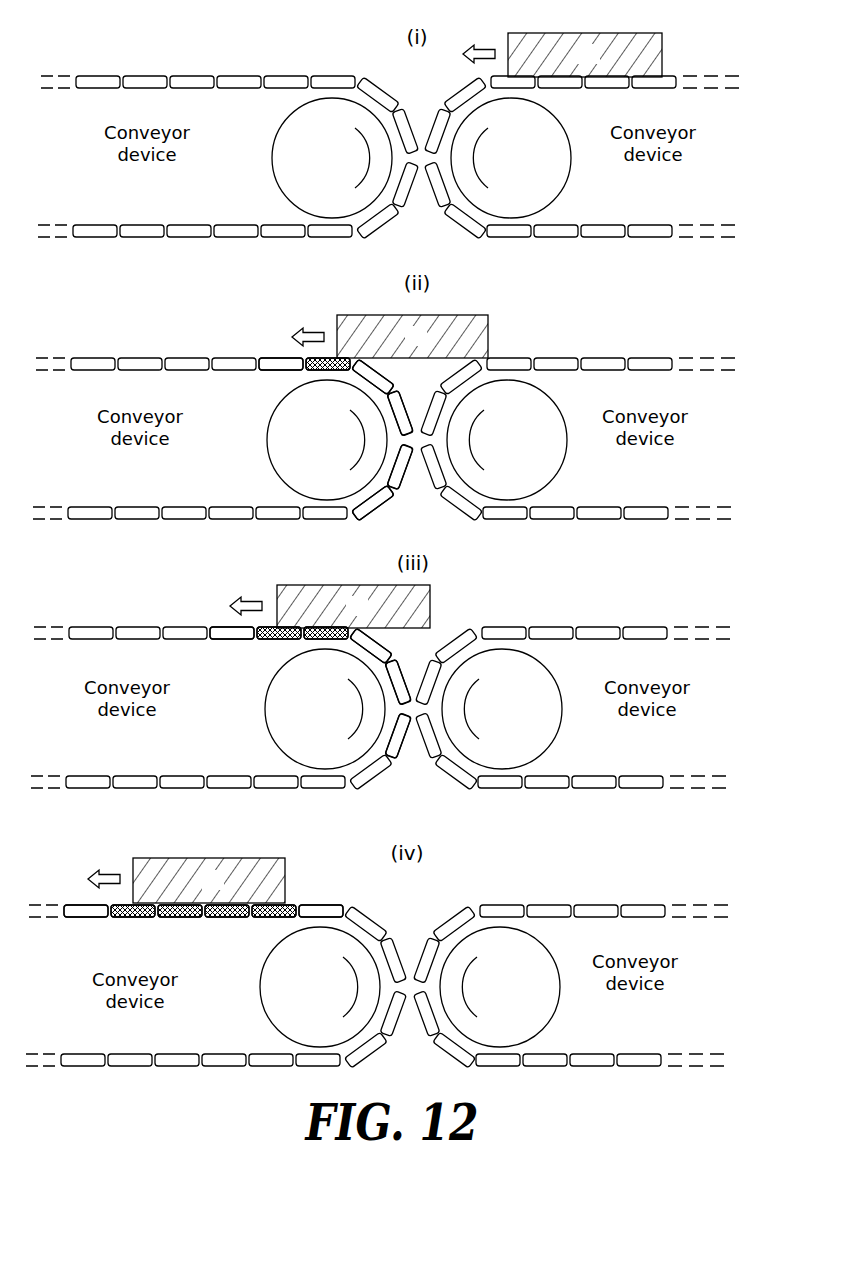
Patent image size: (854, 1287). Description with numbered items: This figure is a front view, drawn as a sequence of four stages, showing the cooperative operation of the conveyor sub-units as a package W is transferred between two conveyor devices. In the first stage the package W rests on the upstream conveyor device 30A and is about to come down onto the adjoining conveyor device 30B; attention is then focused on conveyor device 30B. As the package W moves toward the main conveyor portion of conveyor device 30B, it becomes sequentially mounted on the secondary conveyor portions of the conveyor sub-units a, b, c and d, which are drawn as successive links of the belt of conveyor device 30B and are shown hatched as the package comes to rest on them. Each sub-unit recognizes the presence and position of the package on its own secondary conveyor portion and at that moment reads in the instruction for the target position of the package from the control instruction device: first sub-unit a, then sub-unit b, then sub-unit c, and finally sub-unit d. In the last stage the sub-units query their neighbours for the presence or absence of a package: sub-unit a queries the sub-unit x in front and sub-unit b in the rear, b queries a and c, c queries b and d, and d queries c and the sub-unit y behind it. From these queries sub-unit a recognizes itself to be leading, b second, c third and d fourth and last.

The upstream conveyor device 30A is at (638, 198).
The conveyor device 30B is at (128, 198).
The workpiece W is at (397, 468).
The conveyor sub-unit a is at (314, 371).
The conveyor sub-unit b is at (354, 391).
The conveyor sub-unit c is at (408, 406).
The conveyor sub-unit d is at (404, 469).
The conveyor sub-unit x is at (289, 371).
The conveyor sub-unit y is at (373, 506).